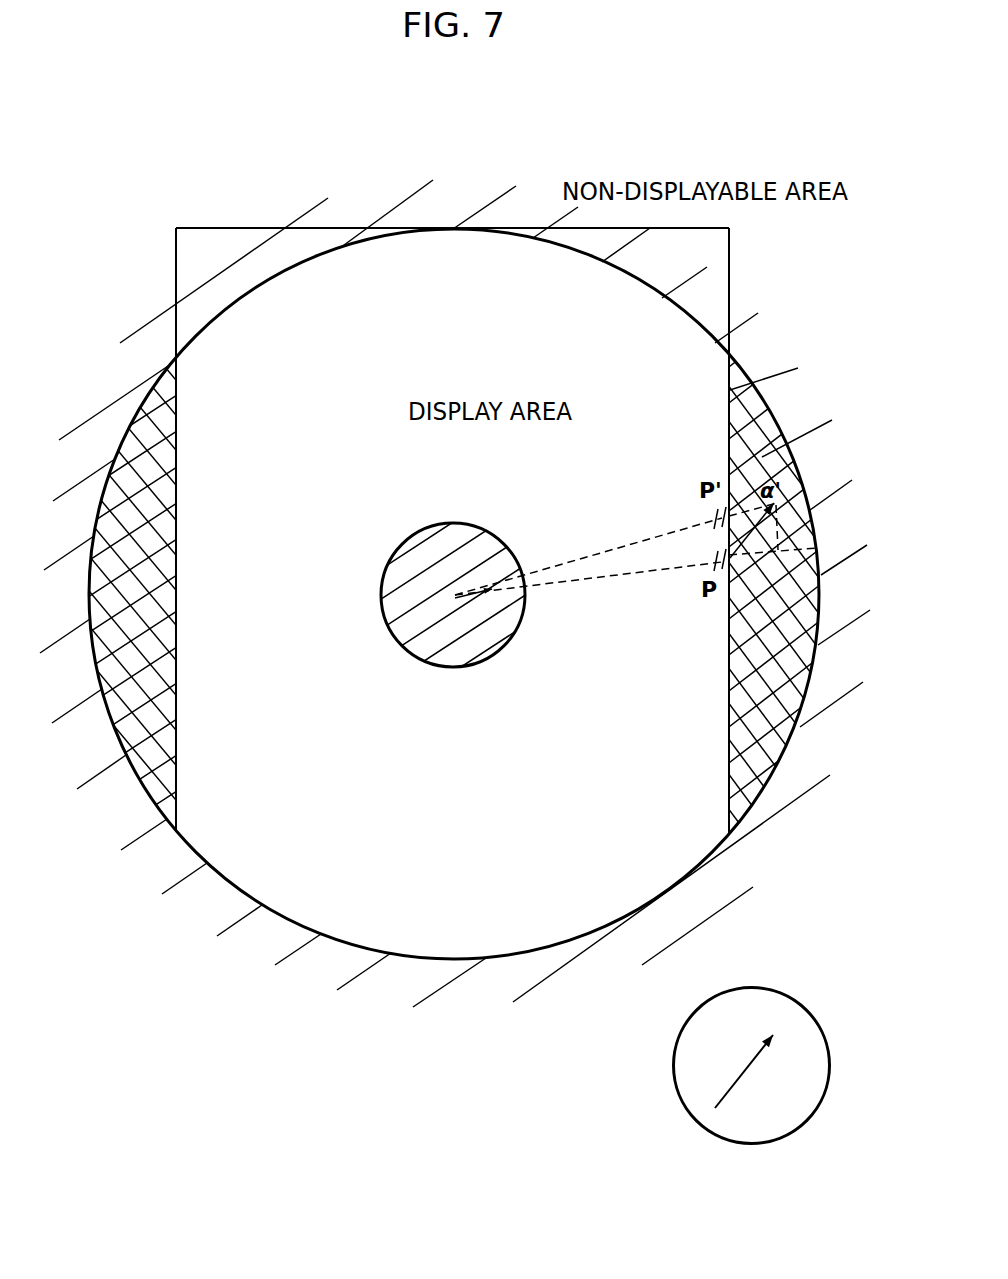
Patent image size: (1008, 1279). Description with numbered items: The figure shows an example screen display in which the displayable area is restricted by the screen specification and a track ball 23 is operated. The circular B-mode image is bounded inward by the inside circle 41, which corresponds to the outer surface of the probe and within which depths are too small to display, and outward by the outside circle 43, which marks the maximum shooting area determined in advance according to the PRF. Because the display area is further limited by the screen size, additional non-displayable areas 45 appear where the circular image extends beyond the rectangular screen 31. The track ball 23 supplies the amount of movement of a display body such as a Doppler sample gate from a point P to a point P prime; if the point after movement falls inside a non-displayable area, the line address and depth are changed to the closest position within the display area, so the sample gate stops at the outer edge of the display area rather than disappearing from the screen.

The display panel 31 is at (440, 252).
The inside circle 41 is at (522, 622).
The outside circle 43 is at (497, 958).
The non-displayable region 45 is at (177, 722).
The track ball 23 is at (827, 1094).